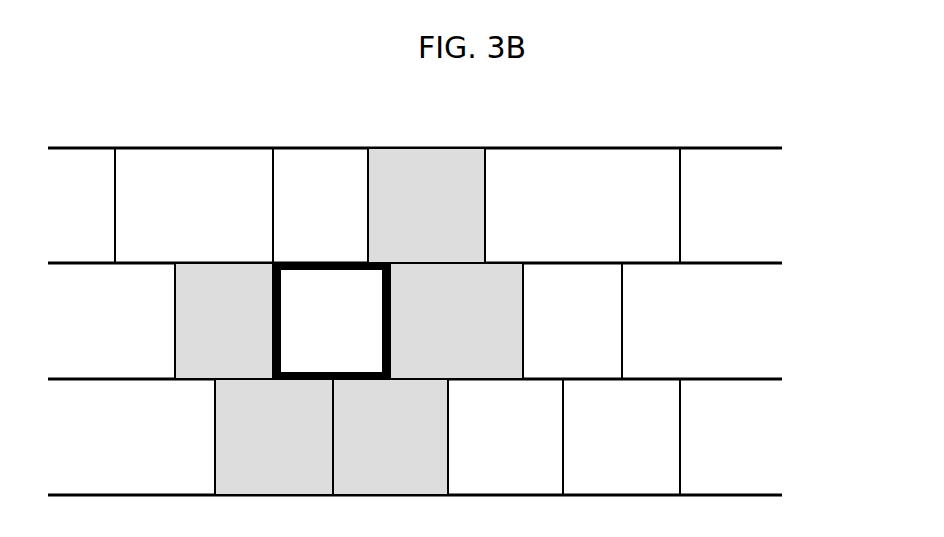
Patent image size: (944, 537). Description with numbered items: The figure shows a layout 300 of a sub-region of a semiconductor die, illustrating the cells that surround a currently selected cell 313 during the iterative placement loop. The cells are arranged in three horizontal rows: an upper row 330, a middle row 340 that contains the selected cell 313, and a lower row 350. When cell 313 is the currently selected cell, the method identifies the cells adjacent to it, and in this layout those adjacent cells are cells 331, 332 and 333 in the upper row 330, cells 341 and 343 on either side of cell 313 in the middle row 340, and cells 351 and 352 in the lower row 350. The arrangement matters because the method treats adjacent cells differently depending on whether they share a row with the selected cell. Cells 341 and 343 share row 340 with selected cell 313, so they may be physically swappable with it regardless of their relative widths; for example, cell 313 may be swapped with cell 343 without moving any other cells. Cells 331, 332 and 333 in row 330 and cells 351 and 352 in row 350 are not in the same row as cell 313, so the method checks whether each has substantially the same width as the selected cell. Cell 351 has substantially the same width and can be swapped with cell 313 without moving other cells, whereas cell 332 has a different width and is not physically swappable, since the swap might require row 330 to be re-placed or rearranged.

The layout 300 is at (740, 110).
The row 330 is at (795, 148).
The row 340 is at (795, 263).
The row 350 is at (795, 379).
The adjacent cell 331 is at (194, 205).
The adjacent cell 332 is at (320, 205).
The adjacent cell 333 is at (426, 205).
The adjacent cell 341 is at (224, 321).
The selected cell 313 is at (331, 321).
The adjacent cell 343 is at (456, 321).
The adjacent cell 351 is at (274, 437).
The adjacent cell 352 is at (390, 437).